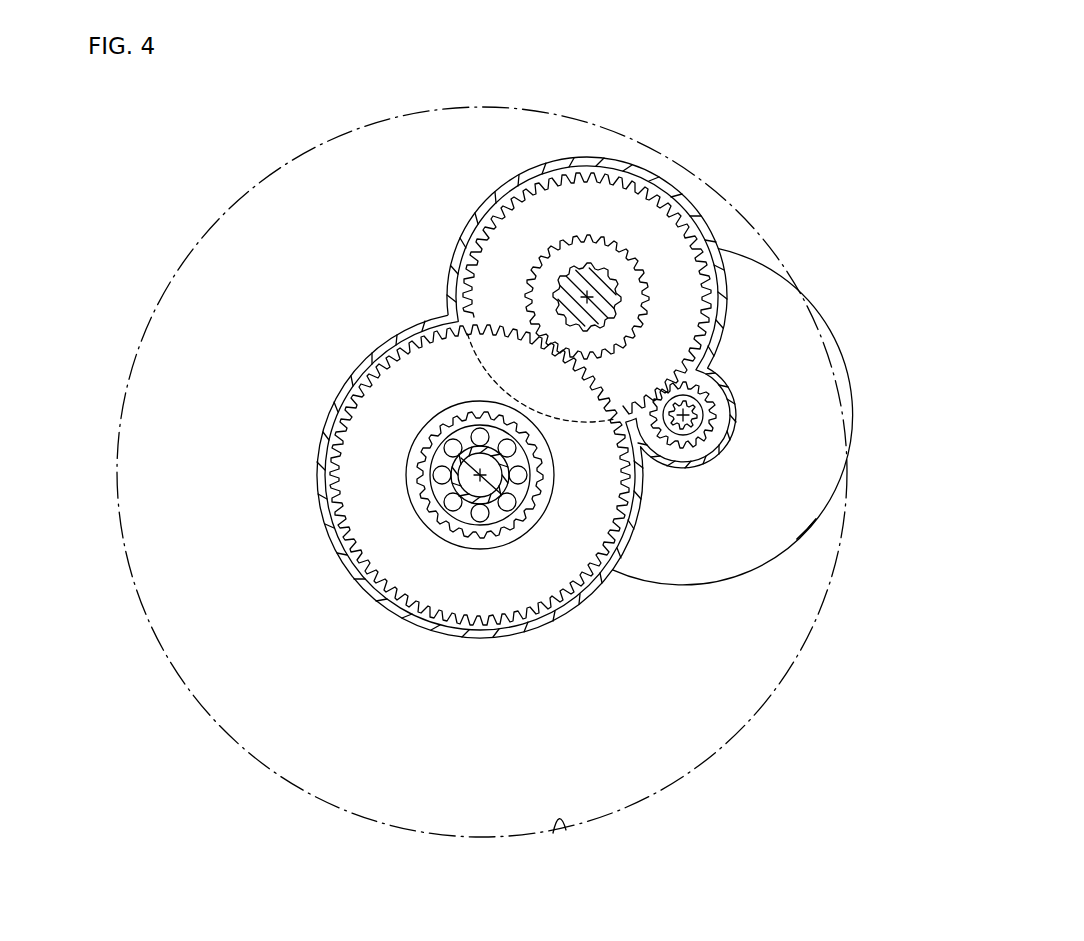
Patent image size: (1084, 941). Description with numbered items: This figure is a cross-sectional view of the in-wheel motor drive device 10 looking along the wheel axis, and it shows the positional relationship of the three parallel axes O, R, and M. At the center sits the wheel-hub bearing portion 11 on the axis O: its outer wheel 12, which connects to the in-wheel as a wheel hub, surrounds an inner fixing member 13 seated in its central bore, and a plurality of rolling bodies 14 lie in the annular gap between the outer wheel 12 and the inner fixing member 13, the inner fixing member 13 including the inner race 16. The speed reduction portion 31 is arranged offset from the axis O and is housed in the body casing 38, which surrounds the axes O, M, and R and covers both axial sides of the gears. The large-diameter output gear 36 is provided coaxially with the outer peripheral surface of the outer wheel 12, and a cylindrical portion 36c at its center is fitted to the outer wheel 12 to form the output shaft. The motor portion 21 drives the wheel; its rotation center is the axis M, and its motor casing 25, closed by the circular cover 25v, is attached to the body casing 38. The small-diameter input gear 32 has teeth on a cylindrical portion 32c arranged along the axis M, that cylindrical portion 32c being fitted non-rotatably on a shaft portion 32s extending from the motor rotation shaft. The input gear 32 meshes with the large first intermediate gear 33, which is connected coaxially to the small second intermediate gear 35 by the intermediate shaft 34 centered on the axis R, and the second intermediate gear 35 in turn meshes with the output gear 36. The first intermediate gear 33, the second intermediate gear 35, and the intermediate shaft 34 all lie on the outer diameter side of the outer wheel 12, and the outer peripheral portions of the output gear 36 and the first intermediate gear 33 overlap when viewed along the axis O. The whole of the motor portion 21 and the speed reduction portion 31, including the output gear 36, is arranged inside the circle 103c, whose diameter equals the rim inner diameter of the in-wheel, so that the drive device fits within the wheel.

The in-wheel motor drive device 10 is at (815, 282).
The wheel-hub bearing portion 11 is at (417, 497).
The outer wheel 12 is at (513, 522).
The inner fixing member 13 is at (452, 508).
The rolling bodies 14 is at (500, 518).
The inner race 16 is at (467, 487).
The motor portion 21 is at (845, 472).
The motor casing 25 is at (807, 530).
The cover 25v is at (854, 543).
The speed reduction portion 31 is at (520, 188).
The input gear 32 is at (708, 392).
The cylindrical portion 32c is at (700, 410).
The shaft portion 32s is at (695, 408).
The first intermediate gear 33 is at (614, 192).
The intermediate shaft 34 is at (607, 286).
The second intermediate gear 35 is at (640, 283).
The output gear 36 is at (485, 613).
The cylindrical portion 36c is at (428, 520).
The body casing 38 is at (370, 358).
The circle 103c is at (572, 833).
The axis R is at (585, 296).
The axis O is at (478, 474).
The axis M is at (685, 417).